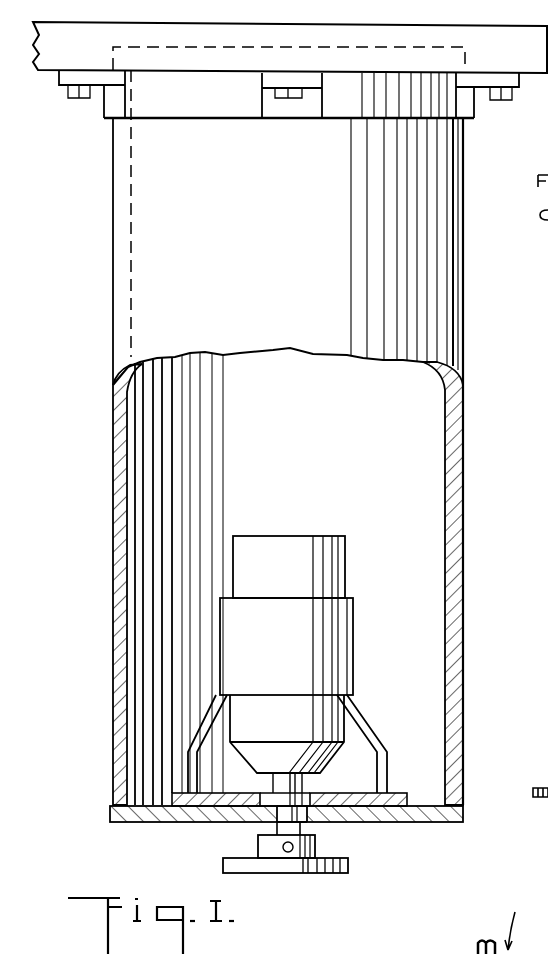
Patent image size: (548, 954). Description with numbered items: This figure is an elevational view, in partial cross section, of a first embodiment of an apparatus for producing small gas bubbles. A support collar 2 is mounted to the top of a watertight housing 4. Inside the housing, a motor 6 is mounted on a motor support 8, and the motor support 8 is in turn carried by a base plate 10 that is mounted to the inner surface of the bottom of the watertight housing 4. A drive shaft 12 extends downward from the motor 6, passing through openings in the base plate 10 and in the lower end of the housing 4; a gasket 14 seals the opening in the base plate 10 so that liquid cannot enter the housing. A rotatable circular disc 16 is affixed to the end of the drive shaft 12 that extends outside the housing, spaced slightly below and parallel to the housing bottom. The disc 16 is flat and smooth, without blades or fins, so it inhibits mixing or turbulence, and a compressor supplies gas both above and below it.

The support collar 2 is at (468, 112).
The watertight housing 4 is at (446, 330).
The motor 6 is at (345, 563).
The motor support 8 is at (353, 665).
The base plate 10 is at (385, 822).
The drive shaft 12 is at (298, 825).
The gasket 14 is at (312, 790).
The rotatable circular disc 16 is at (323, 875).